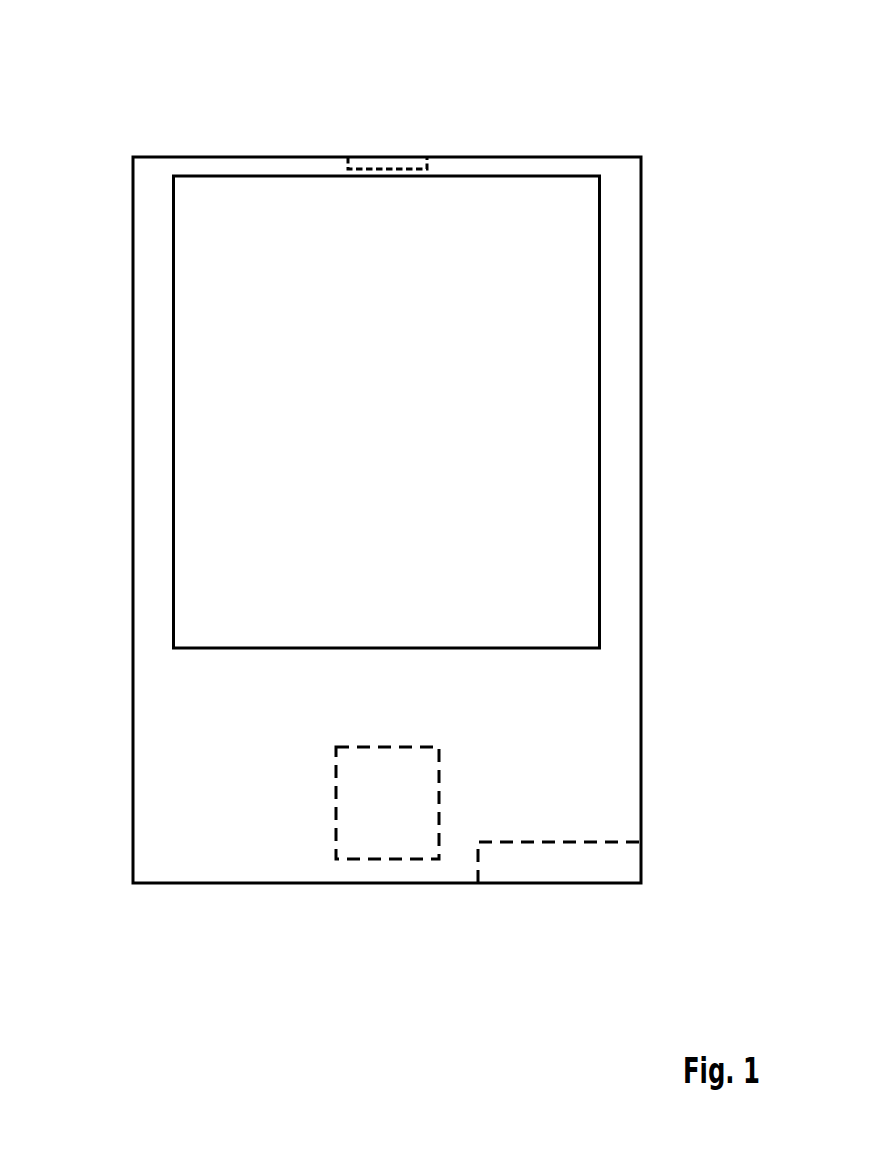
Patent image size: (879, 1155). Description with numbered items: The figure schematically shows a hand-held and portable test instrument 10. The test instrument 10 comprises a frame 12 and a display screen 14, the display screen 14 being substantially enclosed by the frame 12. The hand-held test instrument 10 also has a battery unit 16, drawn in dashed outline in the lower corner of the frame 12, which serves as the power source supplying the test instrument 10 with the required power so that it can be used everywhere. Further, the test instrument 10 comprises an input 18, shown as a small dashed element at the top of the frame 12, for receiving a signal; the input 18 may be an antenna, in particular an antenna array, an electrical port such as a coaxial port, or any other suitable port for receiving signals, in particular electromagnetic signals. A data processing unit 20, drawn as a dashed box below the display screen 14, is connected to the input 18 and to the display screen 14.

The hand-held test instrument 10 is at (717, 94).
The frame 12 is at (632, 359).
The display screen 14 is at (202, 317).
The battery unit 16 is at (620, 863).
The input 18 is at (363, 160).
The data processing unit 20 is at (357, 847).